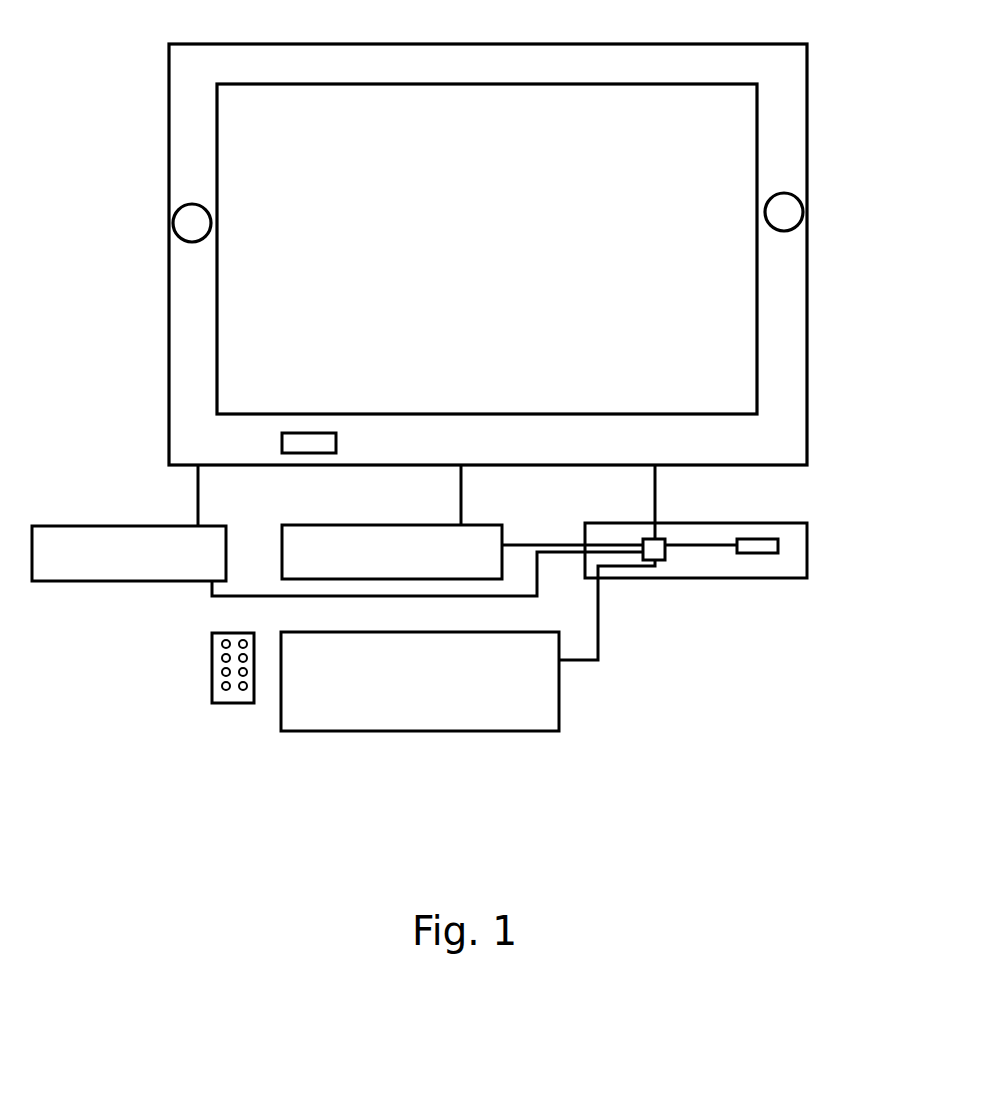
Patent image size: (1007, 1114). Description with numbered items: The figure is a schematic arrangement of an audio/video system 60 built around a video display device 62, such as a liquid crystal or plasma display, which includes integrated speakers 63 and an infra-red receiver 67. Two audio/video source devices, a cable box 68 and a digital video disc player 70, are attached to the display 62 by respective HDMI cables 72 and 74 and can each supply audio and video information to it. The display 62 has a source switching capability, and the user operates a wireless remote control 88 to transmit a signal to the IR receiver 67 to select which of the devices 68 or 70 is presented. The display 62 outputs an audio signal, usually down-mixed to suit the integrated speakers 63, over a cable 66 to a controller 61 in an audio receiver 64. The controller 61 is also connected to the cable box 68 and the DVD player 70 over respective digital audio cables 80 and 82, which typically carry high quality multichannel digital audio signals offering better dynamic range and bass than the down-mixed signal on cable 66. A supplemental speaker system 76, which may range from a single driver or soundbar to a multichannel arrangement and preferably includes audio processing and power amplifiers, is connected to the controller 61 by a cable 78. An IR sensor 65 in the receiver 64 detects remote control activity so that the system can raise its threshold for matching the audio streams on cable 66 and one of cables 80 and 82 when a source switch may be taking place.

The audio/video system 60 is at (100, 376).
The controller 61 is at (665, 553).
The video display device 62 is at (807, 330).
The integrated speakers 63 is at (173, 222).
The audio receiver 64 is at (807, 561).
The IR sensor 65 is at (763, 553).
The cable 66 is at (655, 483).
The infra-red receiver 67 is at (281, 443).
The cable box 68 is at (183, 566).
The digital video disc player 70 is at (401, 564).
The HDMI cable 72 is at (198, 483).
The HDMI cable 74 is at (461, 483).
The supplemental speaker system 76 is at (499, 712).
The cable 78 is at (598, 604).
The digital audio cable 80 is at (255, 597).
The digital audio cable 82 is at (572, 543).
The wireless remote control 88 is at (212, 648).